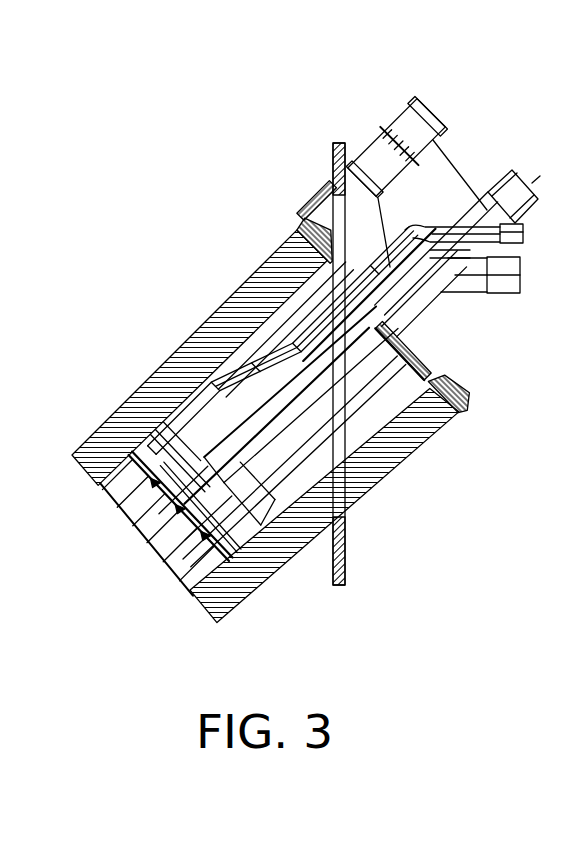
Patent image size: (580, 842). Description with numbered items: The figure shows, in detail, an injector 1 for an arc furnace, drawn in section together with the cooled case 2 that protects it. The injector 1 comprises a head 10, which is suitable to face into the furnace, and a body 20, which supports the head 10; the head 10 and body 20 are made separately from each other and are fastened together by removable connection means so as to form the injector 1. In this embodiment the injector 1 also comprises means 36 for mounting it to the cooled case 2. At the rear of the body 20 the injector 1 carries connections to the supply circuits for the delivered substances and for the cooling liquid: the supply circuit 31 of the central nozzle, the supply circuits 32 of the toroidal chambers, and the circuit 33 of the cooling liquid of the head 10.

The injector 1 is at (315, 399).
The cooled case 2 is at (200, 323).
The head 10 is at (115, 408).
The body 20 is at (137, 385).
The supply circuit of the central nozzle 31 is at (462, 208).
The supply circuits of the toroidal chambers 32 is at (467, 283).
The circuit of the cooling liquid of the head 33 is at (443, 227).
The means for mounting 36 is at (430, 107).